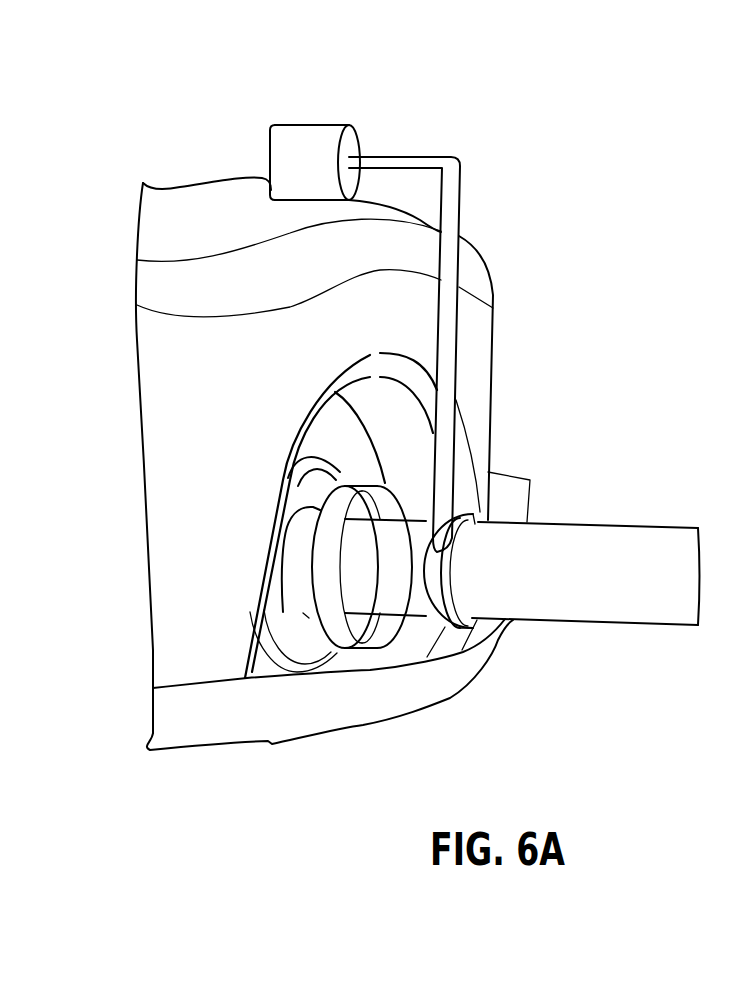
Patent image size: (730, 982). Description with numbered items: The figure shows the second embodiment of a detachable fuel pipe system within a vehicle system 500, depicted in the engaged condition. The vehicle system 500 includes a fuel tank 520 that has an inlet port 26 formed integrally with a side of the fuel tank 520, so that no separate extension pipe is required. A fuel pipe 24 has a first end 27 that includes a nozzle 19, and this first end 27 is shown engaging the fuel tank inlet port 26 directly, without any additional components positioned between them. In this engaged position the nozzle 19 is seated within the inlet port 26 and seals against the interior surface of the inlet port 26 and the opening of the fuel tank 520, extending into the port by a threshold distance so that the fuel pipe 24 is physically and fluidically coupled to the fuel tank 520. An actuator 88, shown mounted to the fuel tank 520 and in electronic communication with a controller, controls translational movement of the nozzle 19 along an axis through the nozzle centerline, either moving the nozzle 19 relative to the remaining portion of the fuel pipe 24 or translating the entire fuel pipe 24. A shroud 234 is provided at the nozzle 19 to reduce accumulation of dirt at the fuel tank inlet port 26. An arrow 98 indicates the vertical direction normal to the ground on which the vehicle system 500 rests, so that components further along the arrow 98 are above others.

The vehicle system 500 is at (515, 166).
The actuator 88 is at (292, 127).
The arrow 98 is at (729, 268).
The first end 27 is at (365, 543).
The fuel pipe 24 is at (612, 553).
The shroud 234 is at (353, 647).
The nozzle 19 is at (307, 613).
The inlet port 26 is at (287, 615).
The fuel tank 520 is at (230, 690).